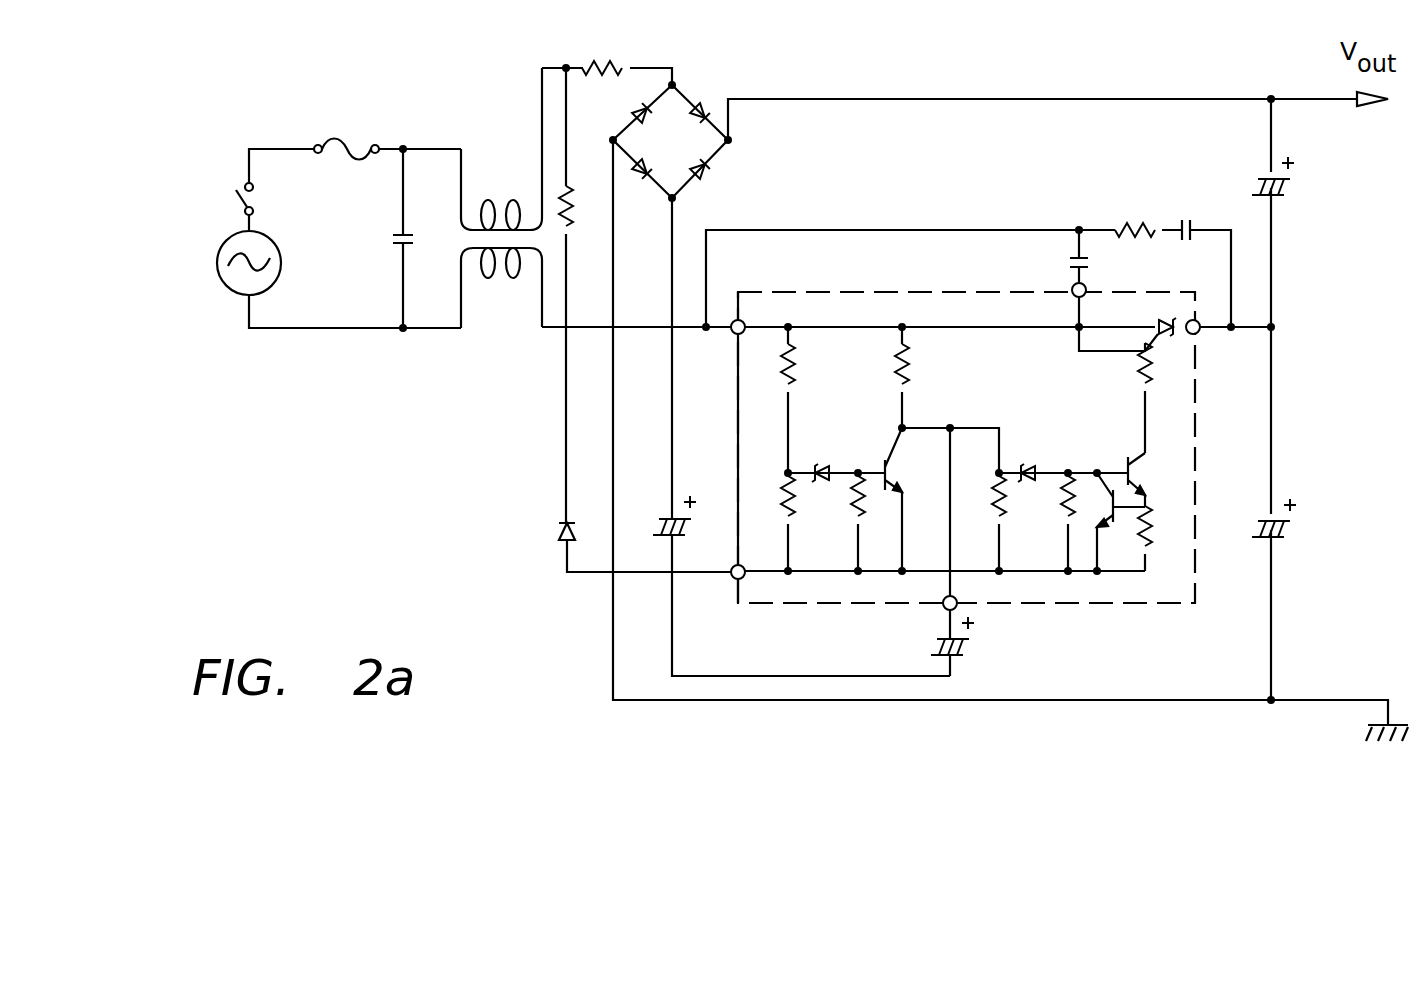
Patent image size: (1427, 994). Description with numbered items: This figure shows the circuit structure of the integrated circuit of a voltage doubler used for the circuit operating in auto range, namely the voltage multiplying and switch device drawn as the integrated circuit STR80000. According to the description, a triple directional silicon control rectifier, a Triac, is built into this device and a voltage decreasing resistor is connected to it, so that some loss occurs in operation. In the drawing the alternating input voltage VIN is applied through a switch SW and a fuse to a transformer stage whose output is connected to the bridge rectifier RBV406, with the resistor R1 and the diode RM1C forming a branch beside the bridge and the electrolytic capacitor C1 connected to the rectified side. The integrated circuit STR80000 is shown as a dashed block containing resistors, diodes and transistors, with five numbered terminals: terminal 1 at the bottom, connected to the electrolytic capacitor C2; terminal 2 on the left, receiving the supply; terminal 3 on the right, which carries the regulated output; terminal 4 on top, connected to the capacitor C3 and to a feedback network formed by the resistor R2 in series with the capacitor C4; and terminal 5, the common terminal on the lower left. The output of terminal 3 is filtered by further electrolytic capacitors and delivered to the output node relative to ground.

The AC input voltage source VIN is at (291, 271).
The power switch SW is at (275, 186).
The resistor R1 is at (587, 295).
The diode RM1C is at (610, 533).
The bridge rectifier RBV406 is at (697, 127).
The electrolytic capacitor C1 is at (789, 437).
The electrolytic capacitor C2 is at (969, 646).
The capacitor C3 is at (1100, 256).
The capacitor C4 is at (1200, 273).
The resistor R2 is at (1130, 214).
The voltage multiplying and switch device STR80000 is at (1004, 429).
The regulator pin 1 is at (942, 618).
The regulator pin 2 is at (728, 339).
The regulator pin 3 is at (1202, 340).
The regulator pin 4 is at (1089, 305).
The regulator pin 5 is at (728, 588).